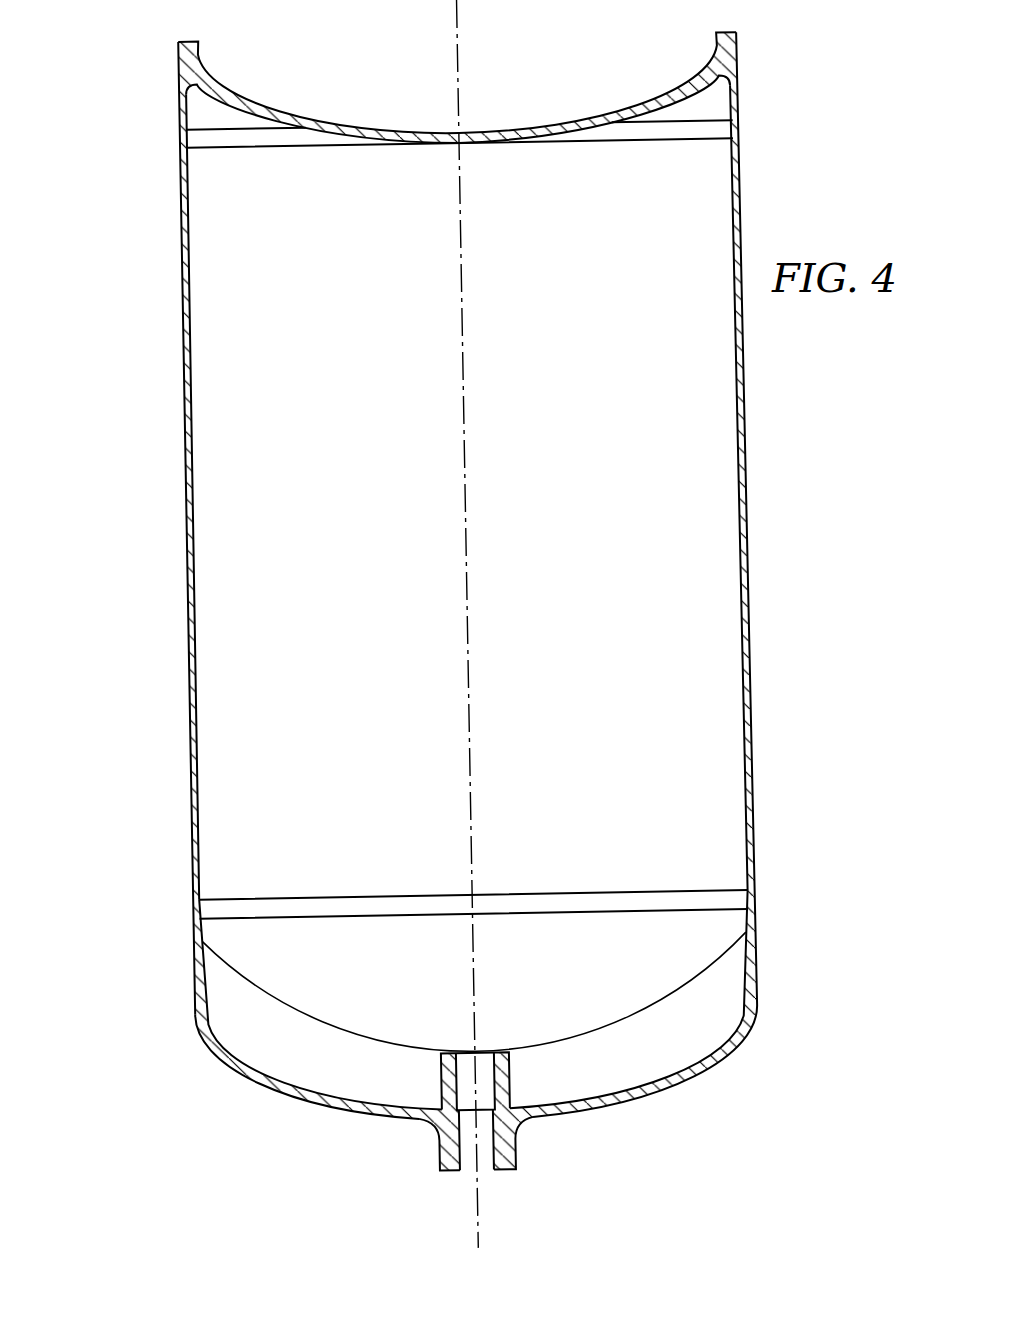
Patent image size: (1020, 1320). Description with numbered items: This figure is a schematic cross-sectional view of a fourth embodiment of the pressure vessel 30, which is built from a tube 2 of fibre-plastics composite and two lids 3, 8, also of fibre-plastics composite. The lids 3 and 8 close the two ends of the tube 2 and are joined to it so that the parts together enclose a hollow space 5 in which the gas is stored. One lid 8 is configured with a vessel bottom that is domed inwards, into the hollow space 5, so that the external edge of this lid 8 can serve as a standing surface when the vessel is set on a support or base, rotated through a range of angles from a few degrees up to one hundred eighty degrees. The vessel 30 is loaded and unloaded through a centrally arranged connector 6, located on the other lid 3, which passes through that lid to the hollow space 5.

The vessel 30 is at (142, 285).
The tube 2 is at (185, 457).
The lid 8 is at (240, 100).
The hollow space 5 is at (225, 633).
The lid 3 is at (202, 1023).
The connector 6 is at (470, 1162).